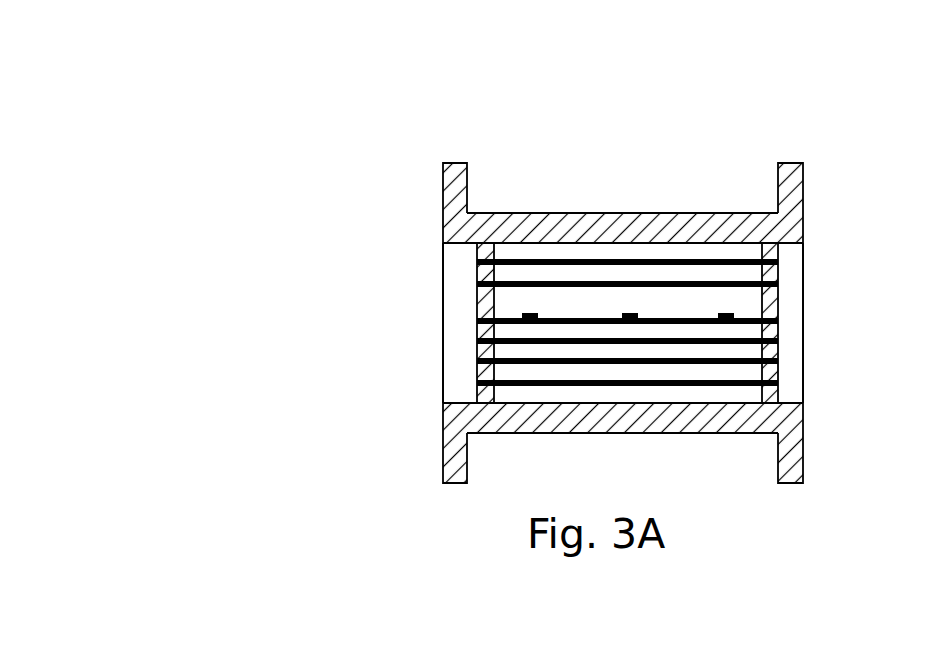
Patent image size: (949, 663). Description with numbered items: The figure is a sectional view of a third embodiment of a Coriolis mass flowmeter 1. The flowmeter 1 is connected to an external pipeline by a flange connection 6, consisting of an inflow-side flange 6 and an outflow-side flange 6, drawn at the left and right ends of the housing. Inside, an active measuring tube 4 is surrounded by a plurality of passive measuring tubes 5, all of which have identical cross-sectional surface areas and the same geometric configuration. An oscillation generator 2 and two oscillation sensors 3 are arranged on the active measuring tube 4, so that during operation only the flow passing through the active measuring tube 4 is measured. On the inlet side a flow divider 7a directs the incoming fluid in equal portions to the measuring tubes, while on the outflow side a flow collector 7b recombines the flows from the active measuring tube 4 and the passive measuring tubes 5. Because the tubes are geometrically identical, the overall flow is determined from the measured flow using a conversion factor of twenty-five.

The Coriolis mass flowmeter 1 is at (288, 150).
The oscillation generator 2 is at (631, 313).
The oscillation sensors 3 is at (527, 313).
The active measuring tube 4 is at (778, 326).
The passive measuring tubes 5 is at (477, 384).
The flange connection 6 is at (450, 460).
The flow divider 7a is at (477, 307).
The flow collector 7b is at (778, 353).